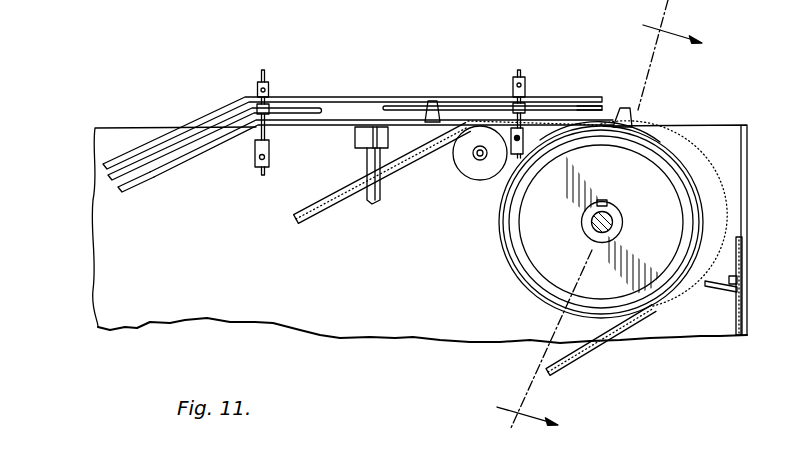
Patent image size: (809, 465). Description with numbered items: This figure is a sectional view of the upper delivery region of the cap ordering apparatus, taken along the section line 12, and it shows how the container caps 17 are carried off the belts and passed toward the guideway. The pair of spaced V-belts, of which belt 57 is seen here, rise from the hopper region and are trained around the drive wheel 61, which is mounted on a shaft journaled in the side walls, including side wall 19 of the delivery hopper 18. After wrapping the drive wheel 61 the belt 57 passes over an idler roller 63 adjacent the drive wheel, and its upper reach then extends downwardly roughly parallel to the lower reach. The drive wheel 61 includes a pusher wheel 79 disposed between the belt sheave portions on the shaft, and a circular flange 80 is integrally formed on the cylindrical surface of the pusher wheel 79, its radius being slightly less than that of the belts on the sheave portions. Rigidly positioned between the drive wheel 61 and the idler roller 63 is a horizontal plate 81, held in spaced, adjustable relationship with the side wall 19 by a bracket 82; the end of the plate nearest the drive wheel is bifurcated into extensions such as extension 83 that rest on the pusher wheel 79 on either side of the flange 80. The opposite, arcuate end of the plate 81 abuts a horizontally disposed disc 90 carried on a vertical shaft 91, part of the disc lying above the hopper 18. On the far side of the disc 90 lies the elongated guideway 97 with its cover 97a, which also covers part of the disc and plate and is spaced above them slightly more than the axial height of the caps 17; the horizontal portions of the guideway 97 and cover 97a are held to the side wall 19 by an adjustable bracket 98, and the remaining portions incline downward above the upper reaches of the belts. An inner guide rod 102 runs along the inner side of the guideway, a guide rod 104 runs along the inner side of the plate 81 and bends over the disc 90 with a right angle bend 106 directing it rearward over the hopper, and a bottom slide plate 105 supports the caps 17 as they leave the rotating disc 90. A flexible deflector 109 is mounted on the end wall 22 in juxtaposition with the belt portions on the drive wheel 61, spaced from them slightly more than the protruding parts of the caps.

The section line 12- 12 is at (599, 231).
The container caps 17 is at (437, 100).
The delivery hopper 18 is at (128, 127).
The side wall 19 is at (134, 327).
The end wall 22 is at (748, 137).
The V-belt 57 is at (297, 226).
The drive wheel 61 is at (678, 193).
The idler roller 63 is at (468, 172).
The pusher wheel 79 is at (550, 263).
The circular flange 80 is at (515, 258).
The horizontal plate 81 is at (545, 137).
The bracket 82 is at (507, 178).
The extension 83 is at (601, 128).
The disc 90 is at (343, 122).
The vertical shaft 91 is at (373, 204).
The guideway 97 is at (86, 168).
The cover 97a is at (152, 145).
The adjustable bracket 98 is at (258, 85).
The guide rod 102 is at (123, 176).
The guide rod 104 is at (580, 97).
The bottom slide plate 105 is at (162, 168).
The right angle bend 106 is at (407, 99).
The deflector 109 is at (712, 292).